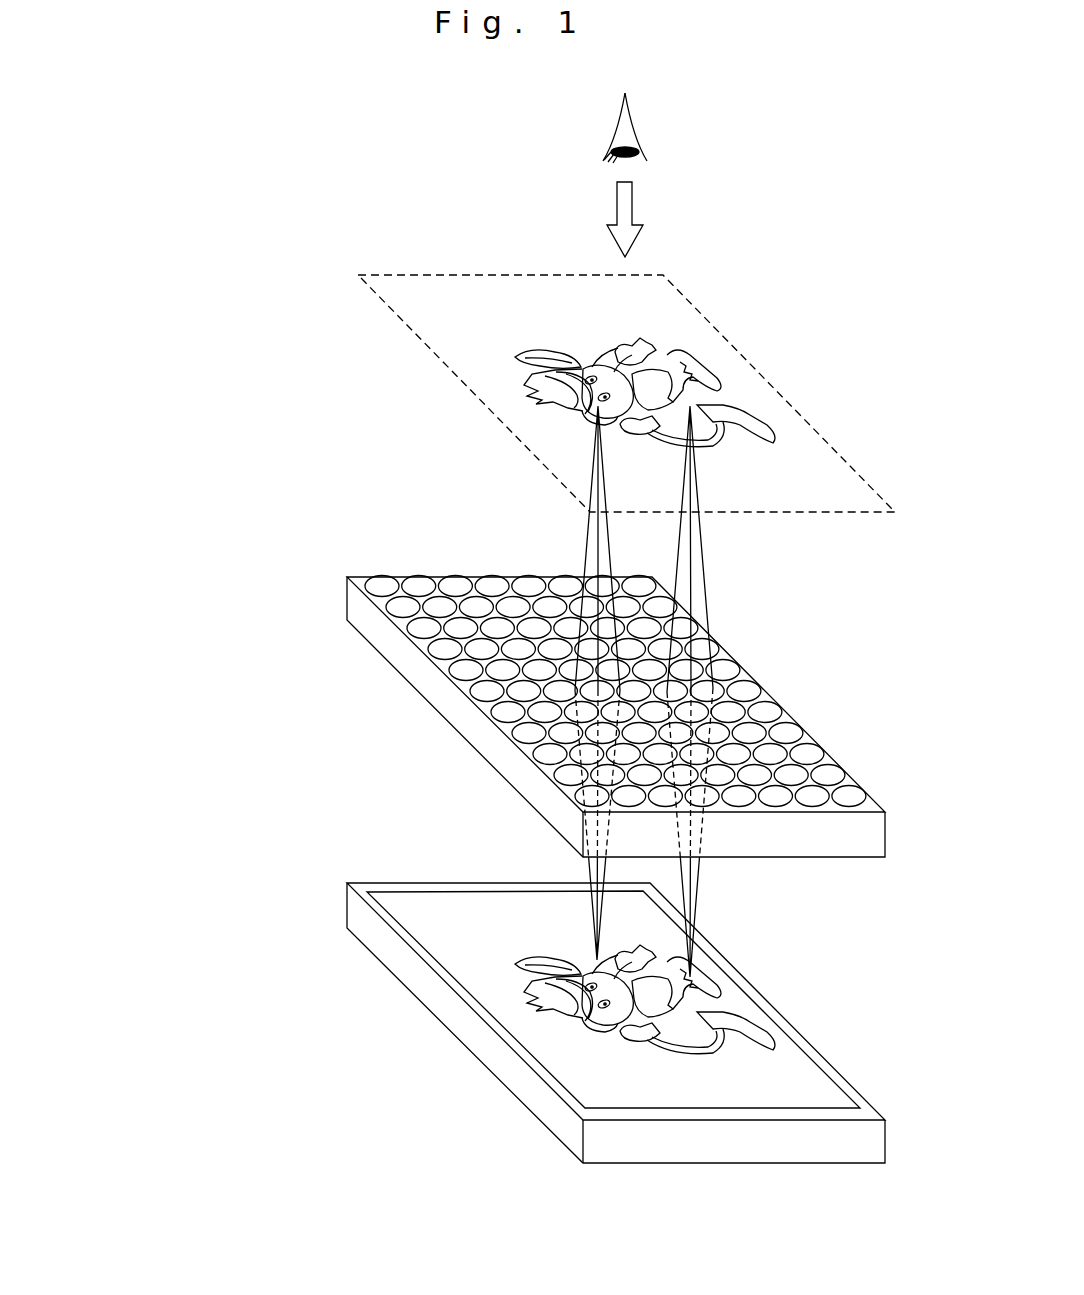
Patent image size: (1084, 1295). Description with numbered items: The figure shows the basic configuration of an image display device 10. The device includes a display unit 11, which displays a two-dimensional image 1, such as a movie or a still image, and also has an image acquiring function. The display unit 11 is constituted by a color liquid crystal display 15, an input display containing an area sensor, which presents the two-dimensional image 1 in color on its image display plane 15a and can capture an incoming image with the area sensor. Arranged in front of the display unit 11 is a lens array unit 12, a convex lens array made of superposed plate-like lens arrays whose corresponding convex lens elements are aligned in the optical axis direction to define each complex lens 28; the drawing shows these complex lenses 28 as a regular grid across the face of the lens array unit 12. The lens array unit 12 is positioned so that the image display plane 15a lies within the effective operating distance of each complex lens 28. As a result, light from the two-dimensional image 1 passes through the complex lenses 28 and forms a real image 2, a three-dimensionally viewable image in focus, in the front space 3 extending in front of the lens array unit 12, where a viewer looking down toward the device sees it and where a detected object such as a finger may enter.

The two-dimensional image 1 is at (745, 1032).
The real image 2 is at (766, 424).
The front space 3 is at (380, 302).
The image display device 10 is at (503, 833).
The display unit 11 is at (567, 968).
The lens array unit 12 is at (568, 680).
The display 15 is at (597, 968).
The image display plane 15a is at (423, 907).
The complex lens 28 is at (475, 604).